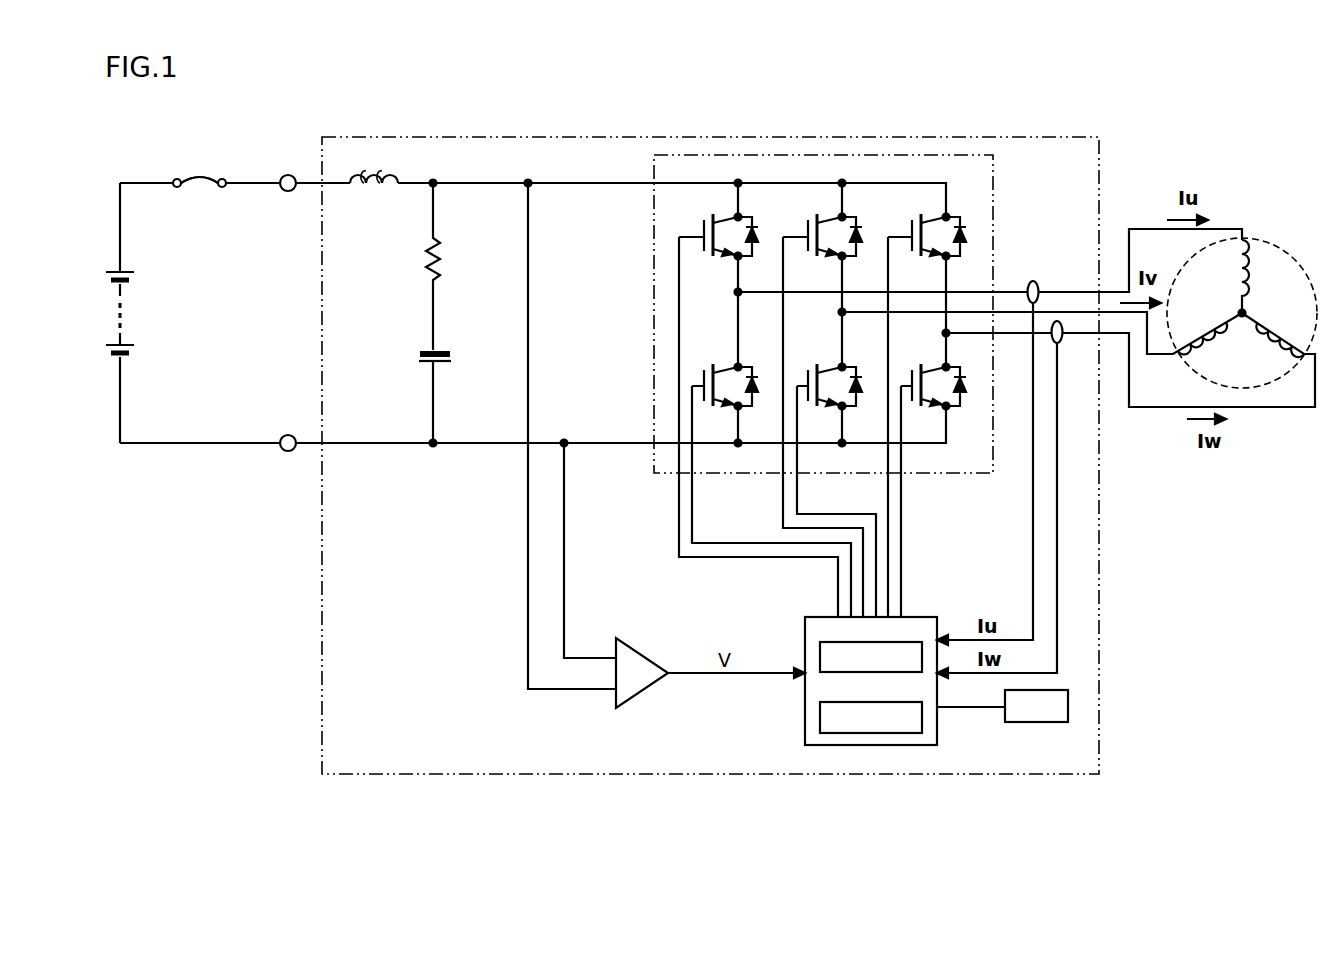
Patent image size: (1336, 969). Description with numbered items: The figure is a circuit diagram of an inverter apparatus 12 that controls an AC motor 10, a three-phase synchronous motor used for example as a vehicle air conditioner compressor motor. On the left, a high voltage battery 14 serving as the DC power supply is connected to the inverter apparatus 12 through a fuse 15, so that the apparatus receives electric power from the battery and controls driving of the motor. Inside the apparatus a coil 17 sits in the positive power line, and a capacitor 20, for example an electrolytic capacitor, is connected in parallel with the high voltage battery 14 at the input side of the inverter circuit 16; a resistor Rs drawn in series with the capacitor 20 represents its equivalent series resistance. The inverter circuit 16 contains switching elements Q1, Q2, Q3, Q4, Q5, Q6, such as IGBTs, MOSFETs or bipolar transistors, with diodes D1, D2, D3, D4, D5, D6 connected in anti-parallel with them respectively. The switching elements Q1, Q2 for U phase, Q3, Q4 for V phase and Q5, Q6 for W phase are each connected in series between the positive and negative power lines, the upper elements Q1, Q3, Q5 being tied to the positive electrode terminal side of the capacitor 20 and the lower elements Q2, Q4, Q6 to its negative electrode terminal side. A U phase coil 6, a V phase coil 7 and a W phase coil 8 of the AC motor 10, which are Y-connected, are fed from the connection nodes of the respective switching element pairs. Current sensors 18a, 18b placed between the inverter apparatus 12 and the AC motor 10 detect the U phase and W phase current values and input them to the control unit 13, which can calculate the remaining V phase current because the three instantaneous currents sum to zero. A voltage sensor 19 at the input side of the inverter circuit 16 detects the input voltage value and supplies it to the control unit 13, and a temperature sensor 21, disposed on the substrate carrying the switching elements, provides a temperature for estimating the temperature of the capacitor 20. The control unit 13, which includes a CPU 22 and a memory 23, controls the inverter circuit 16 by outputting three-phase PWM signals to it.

The U phase coil 6 is at (1250, 268).
The V phase coil 7 is at (1211, 324).
The W phase coil 8 is at (1279, 324).
The AC motor 10 is at (1283, 248).
The inverter apparatus 12 is at (977, 137).
The control unit 13 is at (872, 693).
The high voltage battery 14 is at (132, 271).
The fuse 15 is at (208, 193).
The inverter circuit 16 is at (654, 256).
The coil 17 is at (366, 193).
The current sensor 18a is at (1033, 281).
The current sensor 18b is at (1059, 343).
The voltage sensor 19 is at (640, 652).
The capacitor 20 is at (447, 362).
The temperature sensor 21 is at (1040, 722).
The CPU 22 is at (885, 642).
The memory 23 is at (885, 702).
The resistor Rs is at (442, 256).
The switching element Q1 is at (724, 217).
The switching element Q2 is at (728, 367).
The switching element Q3 is at (828, 217).
The switching element Q4 is at (833, 367).
The switching element Q5 is at (933, 217).
The switching element Q6 is at (937, 367).
The diode D1 is at (757, 247).
The diode D2 is at (757, 397).
The diode D3 is at (861, 247).
The diode D4 is at (861, 397).
The diode D5 is at (965, 247).
The diode D6 is at (965, 397).